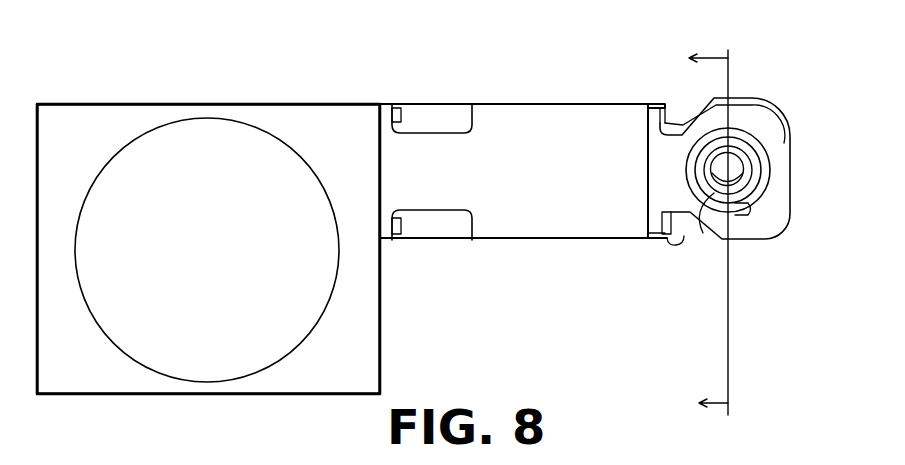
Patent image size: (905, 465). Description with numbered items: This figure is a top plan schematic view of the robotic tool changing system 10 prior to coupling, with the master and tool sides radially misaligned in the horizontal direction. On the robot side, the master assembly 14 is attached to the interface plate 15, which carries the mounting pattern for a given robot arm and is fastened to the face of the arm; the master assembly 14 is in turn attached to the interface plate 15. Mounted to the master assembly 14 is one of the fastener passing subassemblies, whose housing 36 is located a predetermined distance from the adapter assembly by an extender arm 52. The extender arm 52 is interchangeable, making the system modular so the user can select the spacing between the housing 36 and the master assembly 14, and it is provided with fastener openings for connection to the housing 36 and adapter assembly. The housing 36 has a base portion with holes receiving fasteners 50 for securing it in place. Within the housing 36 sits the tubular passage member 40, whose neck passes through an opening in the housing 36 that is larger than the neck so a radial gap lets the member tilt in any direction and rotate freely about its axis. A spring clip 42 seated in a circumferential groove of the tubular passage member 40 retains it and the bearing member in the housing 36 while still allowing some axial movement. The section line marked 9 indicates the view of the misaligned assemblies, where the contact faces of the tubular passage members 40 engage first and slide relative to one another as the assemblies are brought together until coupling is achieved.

The robotic tool changing system 10 is at (260, 53).
The master assembly 14 is at (100, 116).
The interface plate 15 is at (293, 174).
The fasteners 50 is at (401, 114).
The extender arm 52 is at (562, 122).
The housing 36 is at (751, 98).
The tubular passage member 40 is at (699, 229).
The spring clip 42 is at (684, 165).
The section line 9- 9 is at (721, 231).